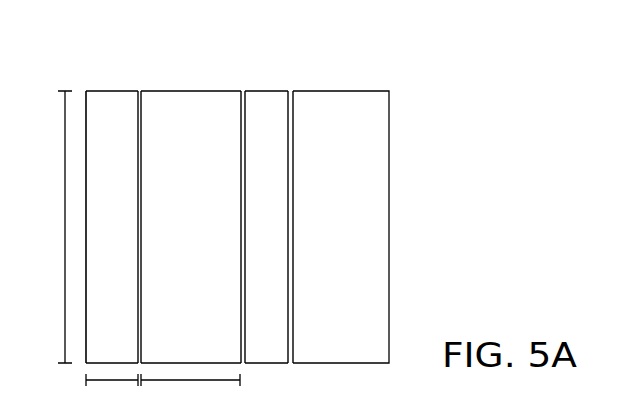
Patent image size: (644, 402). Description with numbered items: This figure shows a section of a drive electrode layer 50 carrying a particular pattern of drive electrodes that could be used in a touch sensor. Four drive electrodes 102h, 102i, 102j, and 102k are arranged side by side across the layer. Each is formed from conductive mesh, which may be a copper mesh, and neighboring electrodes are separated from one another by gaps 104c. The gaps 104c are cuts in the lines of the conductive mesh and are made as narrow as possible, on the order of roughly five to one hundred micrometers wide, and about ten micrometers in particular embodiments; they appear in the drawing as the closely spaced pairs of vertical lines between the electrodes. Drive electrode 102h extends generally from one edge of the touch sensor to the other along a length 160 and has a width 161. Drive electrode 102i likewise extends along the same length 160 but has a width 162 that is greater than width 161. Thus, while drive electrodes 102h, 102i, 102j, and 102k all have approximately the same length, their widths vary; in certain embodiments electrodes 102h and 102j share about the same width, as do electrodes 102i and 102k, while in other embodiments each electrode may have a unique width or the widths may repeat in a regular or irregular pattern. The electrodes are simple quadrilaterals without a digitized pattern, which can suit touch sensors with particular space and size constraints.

The drive electrode layer 50 is at (423, 162).
The drive electrode 102h is at (110, 110).
The drive electrode 102i is at (188, 104).
The drive electrode 102j is at (258, 113).
The drive electrode 102k is at (347, 113).
The gap 104c is at (139, 90).
The length 160 is at (47, 227).
The width 161 is at (112, 388).
The width 162 is at (190, 388).